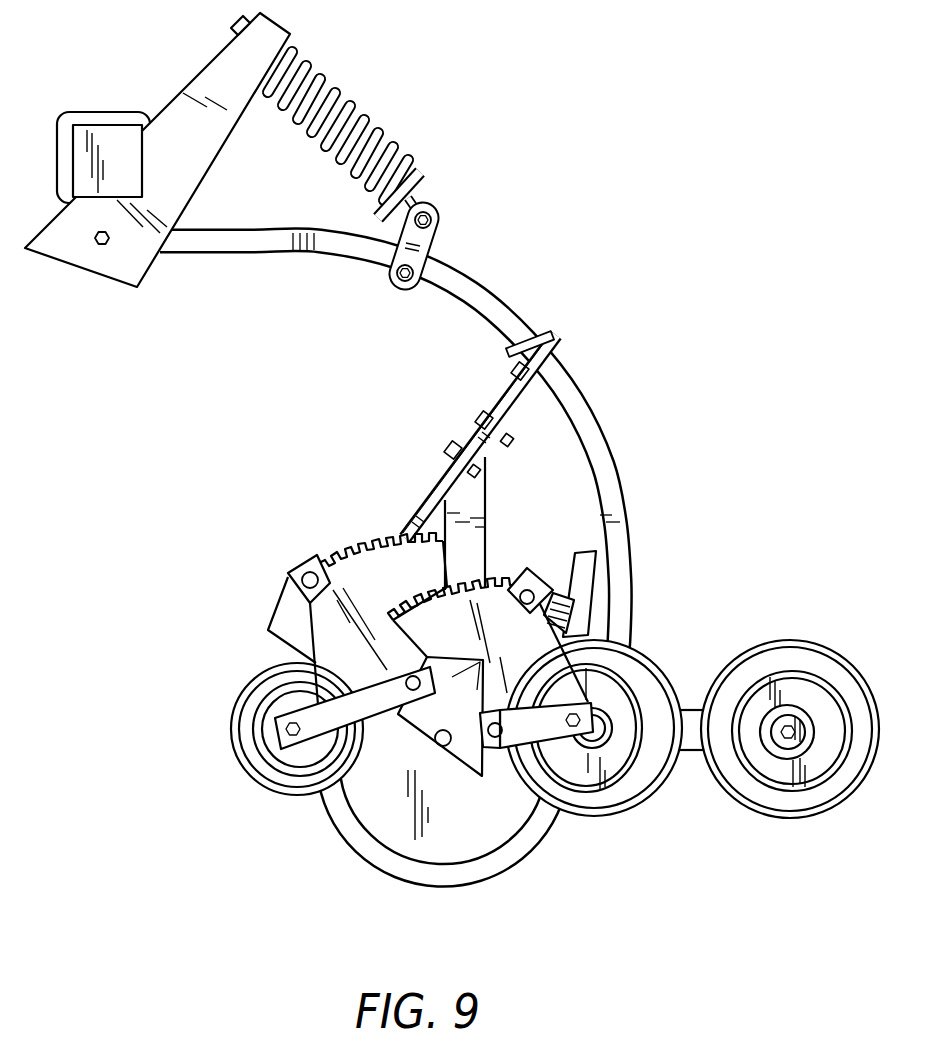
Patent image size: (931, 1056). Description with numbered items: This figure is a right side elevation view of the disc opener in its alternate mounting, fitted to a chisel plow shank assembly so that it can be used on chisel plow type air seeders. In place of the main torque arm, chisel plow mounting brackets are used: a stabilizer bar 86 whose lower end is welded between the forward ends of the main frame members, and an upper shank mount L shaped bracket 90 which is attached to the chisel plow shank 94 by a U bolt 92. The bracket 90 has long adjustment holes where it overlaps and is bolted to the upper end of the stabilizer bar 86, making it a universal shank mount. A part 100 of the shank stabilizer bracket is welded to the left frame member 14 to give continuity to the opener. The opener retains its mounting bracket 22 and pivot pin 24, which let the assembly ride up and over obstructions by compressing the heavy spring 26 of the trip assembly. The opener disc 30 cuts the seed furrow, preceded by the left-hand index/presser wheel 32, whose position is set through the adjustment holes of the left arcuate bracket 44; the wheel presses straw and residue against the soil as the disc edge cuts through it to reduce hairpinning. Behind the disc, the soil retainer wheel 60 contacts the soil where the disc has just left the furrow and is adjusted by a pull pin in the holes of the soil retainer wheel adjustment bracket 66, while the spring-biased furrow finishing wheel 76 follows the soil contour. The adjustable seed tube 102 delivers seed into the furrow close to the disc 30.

The left frame member 14 is at (473, 772).
The mounting bracket 22 is at (170, 172).
The pivot pin 24 is at (100, 245).
The heavy spring 26 is at (353, 107).
The opener disc 30 is at (497, 842).
The left-hand index/presser wheel 32 is at (260, 777).
The left arcuate bracket 44 is at (327, 617).
The soil retainer wheel 60 is at (603, 800).
The soil retainer wheel adjustment bracket 66 is at (535, 648).
The furrow finishing wheel 76 is at (807, 807).
The stabilizer bar 86 is at (443, 483).
The upper shank mount L shaped bracket 90 is at (510, 370).
The U bolt 92 is at (553, 338).
The chisel plow shank 94 is at (467, 273).
The shank stabilizer bracket part 100 is at (473, 493).
The adjustable seed tube 102 is at (580, 572).